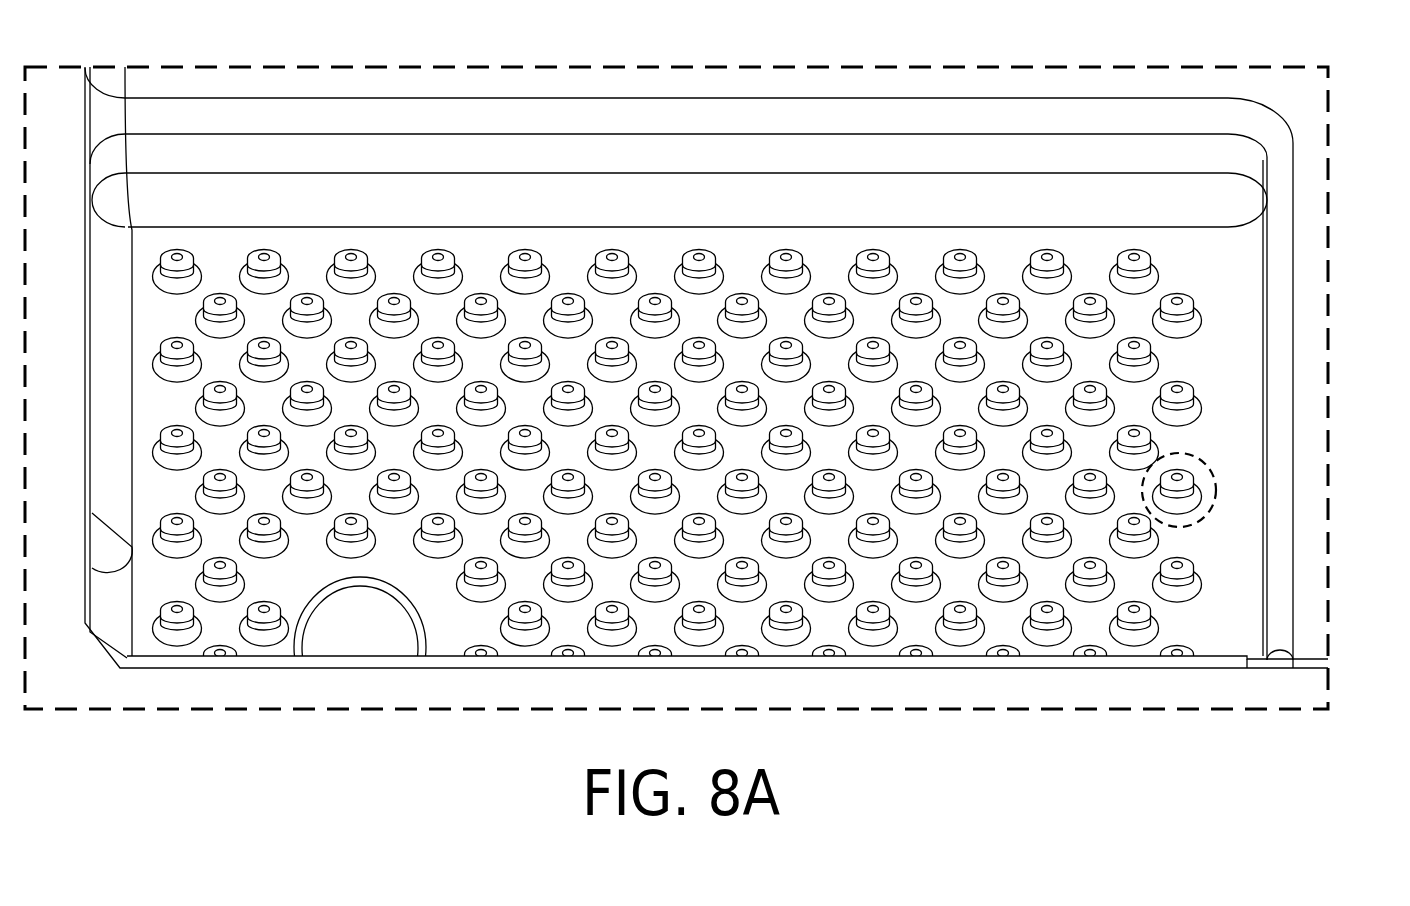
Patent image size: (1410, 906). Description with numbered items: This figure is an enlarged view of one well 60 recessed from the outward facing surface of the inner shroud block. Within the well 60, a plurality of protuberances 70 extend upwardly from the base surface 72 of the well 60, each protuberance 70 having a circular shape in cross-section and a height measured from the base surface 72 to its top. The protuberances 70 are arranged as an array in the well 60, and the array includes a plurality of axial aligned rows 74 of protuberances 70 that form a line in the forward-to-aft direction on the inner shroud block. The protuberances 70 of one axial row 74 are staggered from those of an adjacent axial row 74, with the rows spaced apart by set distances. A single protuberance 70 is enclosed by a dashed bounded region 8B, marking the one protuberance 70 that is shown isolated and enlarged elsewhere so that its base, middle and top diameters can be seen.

The well 60 is at (1181, 228).
The protuberance 70 is at (655, 295).
The base surface 72 is at (920, 252).
The axial aligned row 74 is at (185, 404).
The bounded region 8B is at (1212, 516).